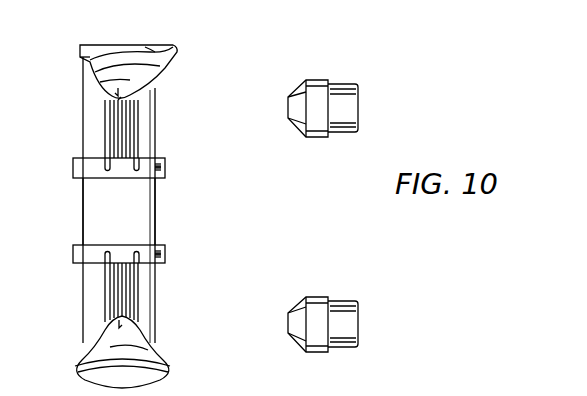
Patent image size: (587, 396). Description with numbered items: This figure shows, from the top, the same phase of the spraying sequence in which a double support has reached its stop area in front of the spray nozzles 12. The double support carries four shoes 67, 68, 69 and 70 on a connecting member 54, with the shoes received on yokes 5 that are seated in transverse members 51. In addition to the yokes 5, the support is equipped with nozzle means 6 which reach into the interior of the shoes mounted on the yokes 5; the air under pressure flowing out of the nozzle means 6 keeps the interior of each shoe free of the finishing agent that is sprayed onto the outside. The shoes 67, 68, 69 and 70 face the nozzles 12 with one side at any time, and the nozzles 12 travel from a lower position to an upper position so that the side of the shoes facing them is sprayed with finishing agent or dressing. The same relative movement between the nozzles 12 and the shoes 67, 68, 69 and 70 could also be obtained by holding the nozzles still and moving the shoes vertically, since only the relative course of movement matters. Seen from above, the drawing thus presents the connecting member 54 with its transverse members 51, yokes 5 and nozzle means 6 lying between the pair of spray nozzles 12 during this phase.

The yoke 5 is at (140, 140).
The nozzle means 6 is at (120, 126).
The nozzle 12 is at (350, 108).
The transverse member 51 is at (165, 170).
The connecting member 54 is at (90, 217).
The shoe 67 is at (80, 371).
The shoe 68 is at (170, 364).
The shoe 69 is at (92, 55).
The shoe 70 is at (150, 50).